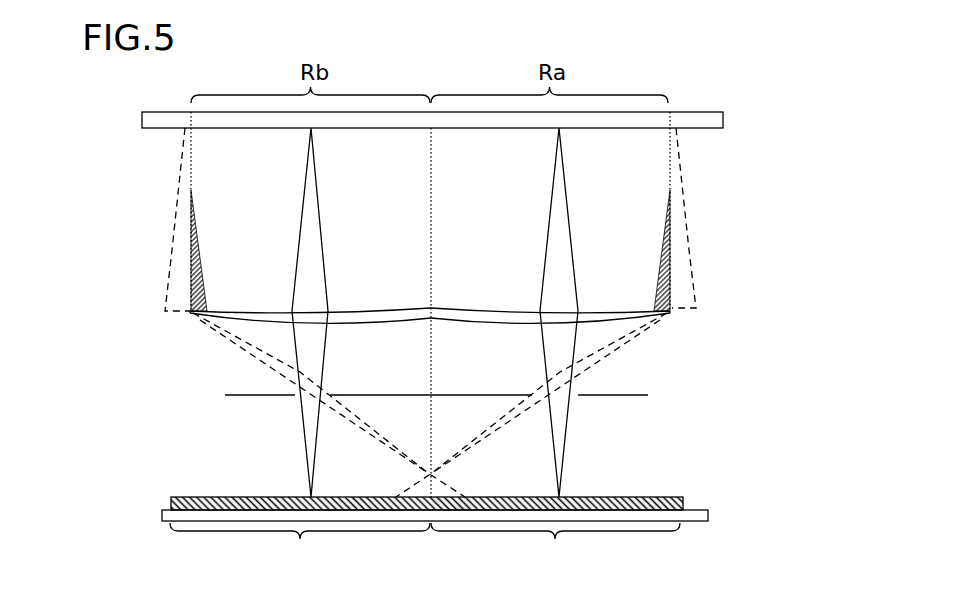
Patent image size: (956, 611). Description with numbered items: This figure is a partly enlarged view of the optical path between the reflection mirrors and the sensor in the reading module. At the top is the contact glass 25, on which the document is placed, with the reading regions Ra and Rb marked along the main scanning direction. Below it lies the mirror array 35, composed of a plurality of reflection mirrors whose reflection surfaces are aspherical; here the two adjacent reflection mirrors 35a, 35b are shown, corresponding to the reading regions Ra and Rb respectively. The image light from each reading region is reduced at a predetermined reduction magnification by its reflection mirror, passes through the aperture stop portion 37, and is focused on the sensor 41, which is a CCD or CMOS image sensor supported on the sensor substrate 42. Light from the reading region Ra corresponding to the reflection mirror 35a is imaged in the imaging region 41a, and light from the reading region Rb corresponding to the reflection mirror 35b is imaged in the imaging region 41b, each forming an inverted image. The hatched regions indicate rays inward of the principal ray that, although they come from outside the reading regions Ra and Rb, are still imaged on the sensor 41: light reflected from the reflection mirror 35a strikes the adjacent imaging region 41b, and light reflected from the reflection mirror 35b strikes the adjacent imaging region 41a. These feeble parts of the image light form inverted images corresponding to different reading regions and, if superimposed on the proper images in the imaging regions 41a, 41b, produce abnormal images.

The contact glass 25 is at (707, 112).
The mirror array 35 is at (487, 291).
The reflection mirror 35a is at (467, 309).
The reflection mirror 35b is at (383, 309).
The aperture stop portion 37 is at (295, 398).
The sensor 41 is at (665, 497).
The imaging region 41a is at (555, 545).
The imaging region 41b is at (300, 545).
The sensor substrate 42 is at (708, 513).